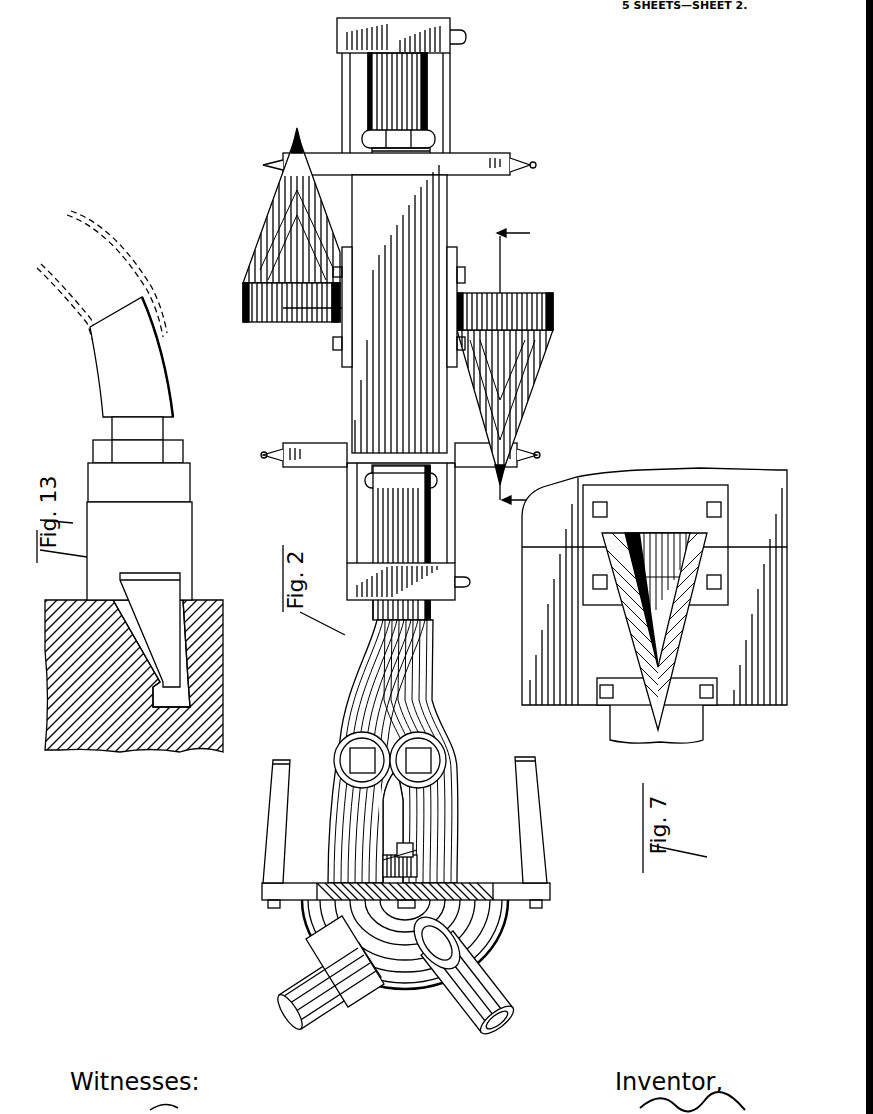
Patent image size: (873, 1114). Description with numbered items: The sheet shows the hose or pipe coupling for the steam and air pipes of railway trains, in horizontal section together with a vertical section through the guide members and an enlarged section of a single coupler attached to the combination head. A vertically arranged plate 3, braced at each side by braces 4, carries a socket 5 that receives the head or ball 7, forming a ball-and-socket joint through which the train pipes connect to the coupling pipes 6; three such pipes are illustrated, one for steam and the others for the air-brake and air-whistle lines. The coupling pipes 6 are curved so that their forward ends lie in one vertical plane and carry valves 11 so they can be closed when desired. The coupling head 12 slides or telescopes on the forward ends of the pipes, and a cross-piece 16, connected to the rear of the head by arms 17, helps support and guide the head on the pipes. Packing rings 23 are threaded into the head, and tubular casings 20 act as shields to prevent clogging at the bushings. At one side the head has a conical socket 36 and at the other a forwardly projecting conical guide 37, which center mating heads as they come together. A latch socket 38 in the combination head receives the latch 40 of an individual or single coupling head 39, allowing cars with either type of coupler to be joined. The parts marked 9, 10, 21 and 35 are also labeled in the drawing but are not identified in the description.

In FIG. 2, the plate 3 is at (417, 627).
In FIG. 2, the braces 4 is at (527, 806).
In FIG. 2, the socket 5 is at (417, 250).
In FIG. 2, the coupling pipes 6 is at (380, 662).
In FIG. 2, the head or ball 7 is at (520, 372).
In FIG. 2, the clamp 9 is at (420, 862).
In FIG. 2, the outlet pipe 10 is at (296, 1026).
In FIG. 2, the valves 11 is at (430, 748).
In FIG. 2, the coupling head 12 is at (352, 405).
In FIG. 7, the coupling head 12 is at (522, 634).
In FIG. 13, the coupling head 12 is at (82, 750).
In FIG. 2, the cross-piece 16 is at (348, 583).
In FIG. 2, the arms 17 is at (349, 506).
In FIG. 7, the arms 17 is at (612, 724).
In FIG. 2, the tubular casings 20 is at (430, 518).
In FIG. 2, the set screw knob 21 is at (470, 582).
In FIG. 2, the packing rings 23 is at (437, 480).
In FIG. 2, the cross arms 35 is at (292, 463).
In FIG. 2, the conical socket 36 is at (266, 222).
In FIG. 7, the conical socket 36 is at (623, 642).
In FIG. 2, the conical guide 37 is at (283, 322).
In FIG. 7, the conical guide 37 is at (621, 535).
In FIG. 13, the latch sockets 38 is at (118, 600).
In FIG. 13, the individual coupling heads 39 is at (193, 535).
In FIG. 13, the latches 40 is at (168, 662).